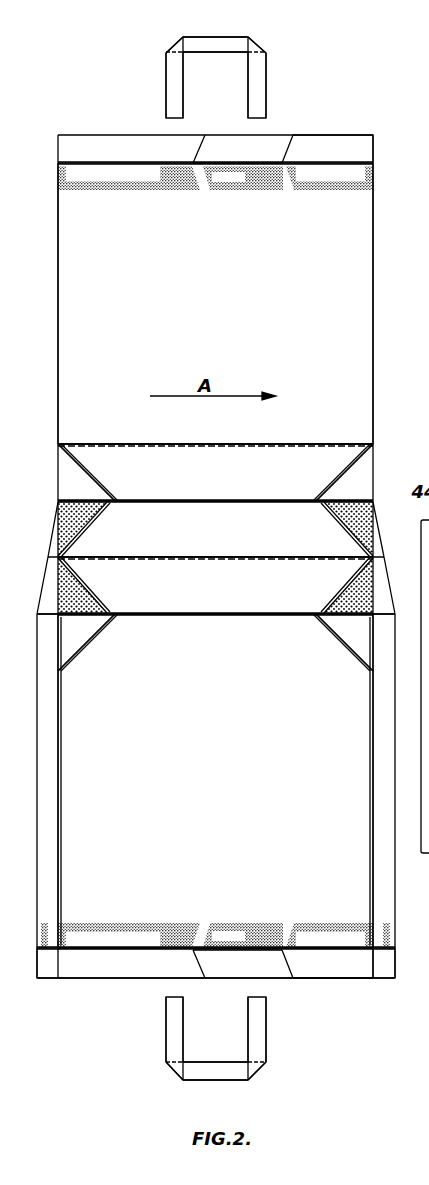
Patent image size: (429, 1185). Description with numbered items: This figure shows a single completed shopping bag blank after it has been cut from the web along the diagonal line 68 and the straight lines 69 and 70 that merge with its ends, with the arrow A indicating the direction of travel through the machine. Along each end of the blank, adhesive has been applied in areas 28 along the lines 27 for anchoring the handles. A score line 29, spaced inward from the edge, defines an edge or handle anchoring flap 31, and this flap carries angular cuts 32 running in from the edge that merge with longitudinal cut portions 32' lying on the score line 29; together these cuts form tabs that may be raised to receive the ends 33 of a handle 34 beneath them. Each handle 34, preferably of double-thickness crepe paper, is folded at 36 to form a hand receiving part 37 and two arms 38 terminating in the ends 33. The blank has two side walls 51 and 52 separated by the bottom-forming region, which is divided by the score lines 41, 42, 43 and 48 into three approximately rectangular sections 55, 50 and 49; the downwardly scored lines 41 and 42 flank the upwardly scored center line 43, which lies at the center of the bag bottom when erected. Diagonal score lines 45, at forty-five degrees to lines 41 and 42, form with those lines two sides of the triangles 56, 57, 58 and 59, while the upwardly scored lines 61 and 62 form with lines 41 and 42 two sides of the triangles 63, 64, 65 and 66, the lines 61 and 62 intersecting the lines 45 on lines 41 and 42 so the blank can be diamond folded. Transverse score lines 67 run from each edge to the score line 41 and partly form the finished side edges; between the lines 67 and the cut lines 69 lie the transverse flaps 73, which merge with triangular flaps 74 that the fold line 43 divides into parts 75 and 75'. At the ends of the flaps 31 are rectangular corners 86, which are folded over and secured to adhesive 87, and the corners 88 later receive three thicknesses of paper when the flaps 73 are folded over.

The adhesive line 27 is at (261, 186).
The adhesive area 28 is at (118, 189).
The score line 29 is at (341, 160).
The edge flap 31 is at (70, 150).
The angular cut 32 is at (255, 555).
The longitudinal cut portion 32' is at (212, 558).
The handle end 33 is at (257, 108).
The handle 34 is at (276, 62).
The fold 36 is at (172, 47).
The hand receiving part 37 is at (204, 42).
The handle arm 38 is at (178, 75).
The score line 41 is at (220, 501).
The score line 42 is at (208, 613).
The center score line 43 is at (201, 557).
The diagonal score line 45 is at (90, 478).
The score line 48 is at (265, 444).
The rectangular section 49 is at (215, 585).
The rectangular section 50 is at (215, 529).
The side wall 51 is at (215, 303).
The side wall 52 is at (215, 781).
The rectangular section 55 is at (215, 472).
The triangle 56 is at (90, 496).
The triangle 57 is at (350, 483).
The triangle 58 is at (352, 633).
The triangle 59 is at (88, 642).
The score line 61 is at (342, 529).
The score line 62 is at (90, 528).
The triangle 63 is at (100, 510).
The triangle 64 is at (332, 514).
The triangle 65 is at (350, 606).
The triangle 66 is at (92, 605).
The transverse score line 67 is at (63, 805).
The diagonal cut line 68 is at (52, 560).
The straight cut line 69 is at (37, 806).
The straight cut line 70 is at (58, 298).
The transverse flap 73 is at (55, 856).
The triangular flap 74 is at (46, 583).
The flap part 75 is at (213, 611).
The flap part 75' is at (216, 529).
The rectangular corner 86 is at (46, 970).
The adhesive 87 is at (40, 933).
The corner 88 is at (393, 935).